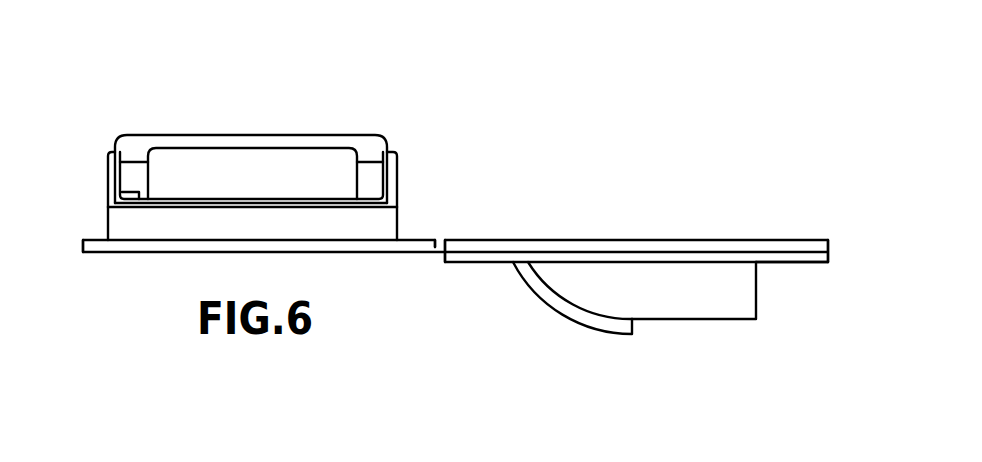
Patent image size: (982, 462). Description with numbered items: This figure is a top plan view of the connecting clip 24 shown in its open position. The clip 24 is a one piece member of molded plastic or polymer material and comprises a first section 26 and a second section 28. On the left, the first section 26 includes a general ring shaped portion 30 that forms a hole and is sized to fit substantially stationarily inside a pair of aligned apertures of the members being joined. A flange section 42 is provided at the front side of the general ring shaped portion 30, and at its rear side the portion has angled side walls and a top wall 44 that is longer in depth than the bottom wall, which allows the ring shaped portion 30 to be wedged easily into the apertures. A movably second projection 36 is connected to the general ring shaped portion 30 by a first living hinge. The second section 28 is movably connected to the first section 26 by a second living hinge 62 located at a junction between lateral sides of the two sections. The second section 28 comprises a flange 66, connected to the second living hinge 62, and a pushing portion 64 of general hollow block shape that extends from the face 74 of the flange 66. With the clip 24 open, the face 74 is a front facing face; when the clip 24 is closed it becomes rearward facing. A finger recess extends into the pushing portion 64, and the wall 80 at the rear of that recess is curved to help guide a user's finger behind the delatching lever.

The connecting clip 24 is at (753, 90).
The first section 26 is at (123, 140).
The movably second projection 36 is at (233, 170).
The top wall 44 is at (372, 220).
The general ring shaped portion 30 is at (120, 243).
The flange section 42 is at (81, 252).
The second living hinge 62 is at (439, 254).
The second section 28 is at (818, 265).
The flange 66 is at (830, 250).
The face 74 is at (783, 268).
The wall 80 is at (567, 300).
The pushing portion 64 is at (660, 320).